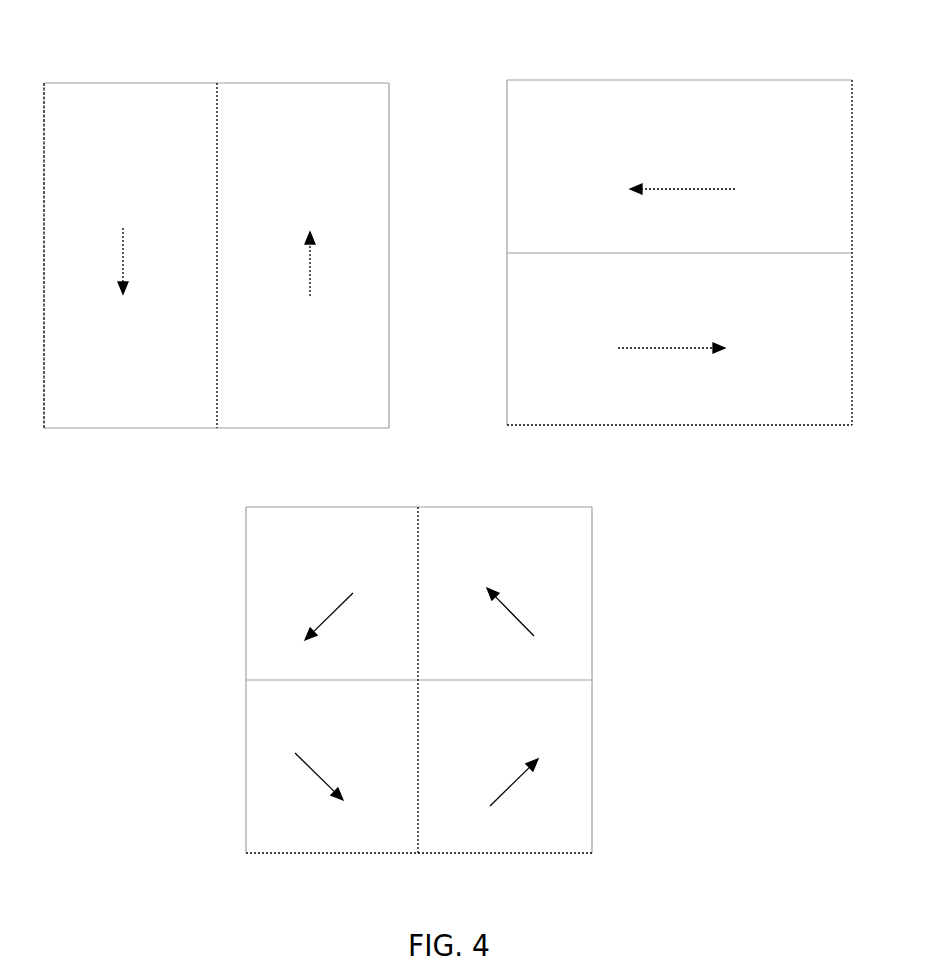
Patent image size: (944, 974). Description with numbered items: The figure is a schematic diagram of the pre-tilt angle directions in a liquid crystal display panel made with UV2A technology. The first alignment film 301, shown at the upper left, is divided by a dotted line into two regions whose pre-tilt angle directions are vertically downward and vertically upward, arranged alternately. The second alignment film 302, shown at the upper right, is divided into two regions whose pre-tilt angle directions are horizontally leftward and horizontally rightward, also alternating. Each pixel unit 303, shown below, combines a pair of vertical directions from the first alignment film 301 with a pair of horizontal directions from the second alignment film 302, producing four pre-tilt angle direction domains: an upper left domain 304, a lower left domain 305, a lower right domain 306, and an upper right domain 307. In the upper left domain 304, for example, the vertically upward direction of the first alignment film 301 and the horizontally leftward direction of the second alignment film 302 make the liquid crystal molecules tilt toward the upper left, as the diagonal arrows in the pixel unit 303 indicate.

The first alignment film 301 is at (220, 83).
The second alignment film 302 is at (670, 82).
The pixel unit 303 is at (592, 681).
The upper left domain 304 is at (548, 563).
The lower left domain 305 is at (286, 636).
The lower right domain 306 is at (290, 797).
The upper right domain 307 is at (548, 815).